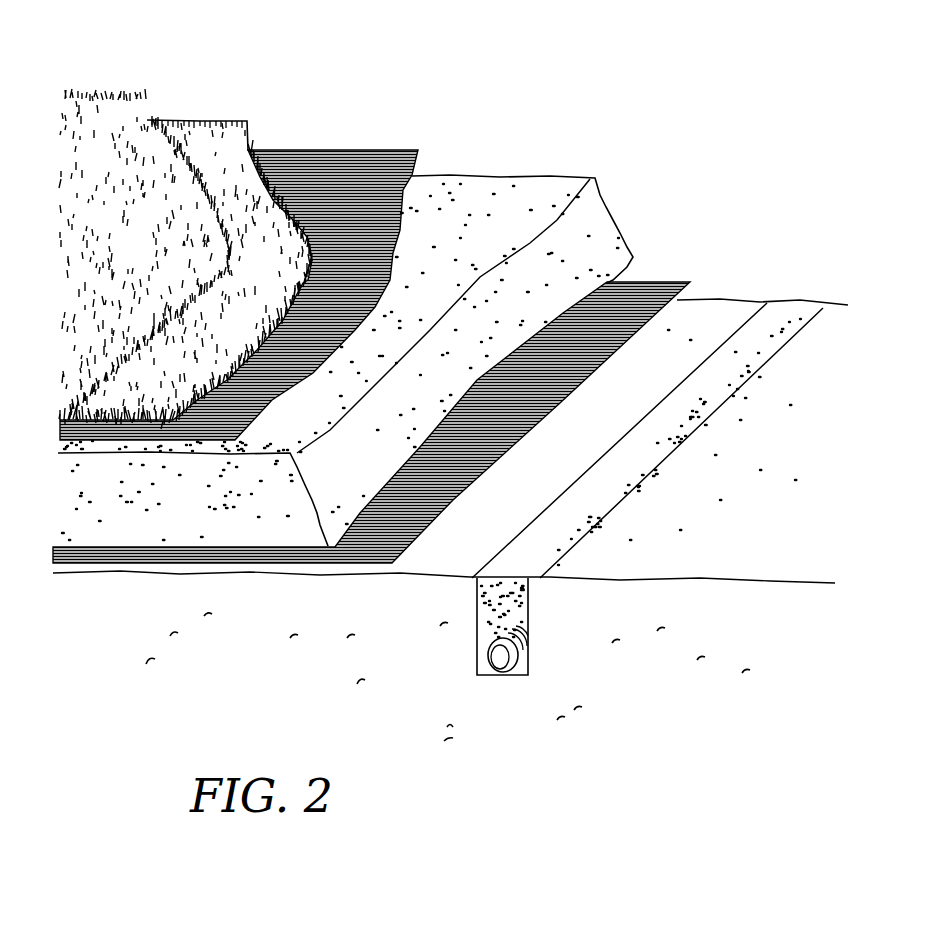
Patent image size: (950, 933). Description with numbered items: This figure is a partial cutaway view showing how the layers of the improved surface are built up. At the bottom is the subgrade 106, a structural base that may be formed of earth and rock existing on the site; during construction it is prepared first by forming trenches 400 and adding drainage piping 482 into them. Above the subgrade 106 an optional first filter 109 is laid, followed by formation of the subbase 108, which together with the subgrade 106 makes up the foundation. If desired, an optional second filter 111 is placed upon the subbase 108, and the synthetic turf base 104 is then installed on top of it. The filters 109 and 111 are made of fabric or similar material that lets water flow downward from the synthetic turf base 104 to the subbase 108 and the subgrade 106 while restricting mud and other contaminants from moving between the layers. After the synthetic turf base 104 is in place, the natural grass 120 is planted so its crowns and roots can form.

The natural grass 120 is at (100, 177).
The synthetic turf base 104 is at (207, 120).
The second filter 111 is at (380, 150).
The subbase 108 is at (507, 174).
The subgrade 106 is at (703, 318).
The first filter 109 is at (349, 563).
The trench 400 is at (476, 614).
The drainage piping 482 is at (510, 677).